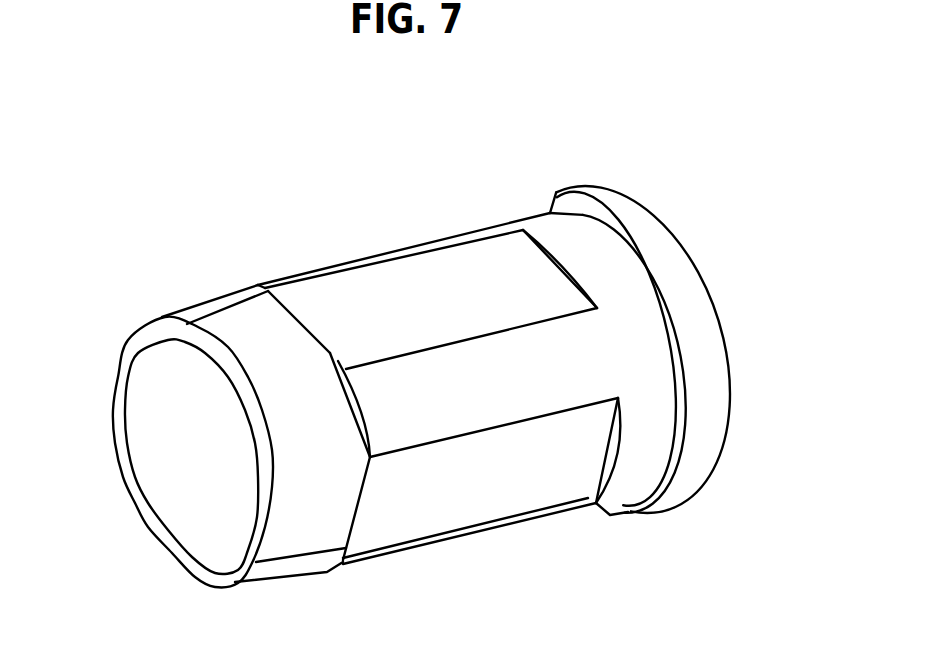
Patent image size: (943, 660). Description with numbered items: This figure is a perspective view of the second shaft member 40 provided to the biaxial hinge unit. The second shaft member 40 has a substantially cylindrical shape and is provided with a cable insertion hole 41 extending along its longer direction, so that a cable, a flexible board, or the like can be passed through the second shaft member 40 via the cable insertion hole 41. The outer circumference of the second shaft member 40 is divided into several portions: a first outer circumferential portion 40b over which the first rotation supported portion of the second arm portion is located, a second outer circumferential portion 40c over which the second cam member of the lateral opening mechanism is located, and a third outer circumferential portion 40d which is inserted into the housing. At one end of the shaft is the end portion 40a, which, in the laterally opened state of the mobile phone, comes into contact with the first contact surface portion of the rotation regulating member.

The second shaft member 40 is at (416, 114).
The end portion 40a is at (699, 272).
The first outer circumferential portion 40b is at (577, 240).
The second outer circumferential portion 40c is at (433, 280).
The third outer circumferential portion 40d is at (217, 312).
The cable insertion hole 41 is at (188, 500).